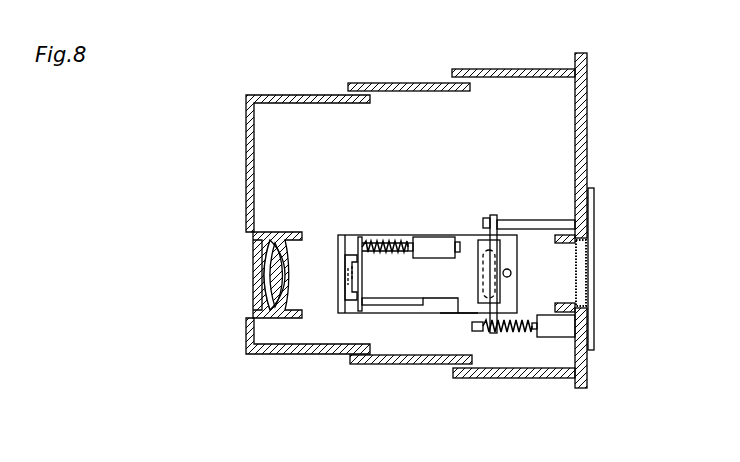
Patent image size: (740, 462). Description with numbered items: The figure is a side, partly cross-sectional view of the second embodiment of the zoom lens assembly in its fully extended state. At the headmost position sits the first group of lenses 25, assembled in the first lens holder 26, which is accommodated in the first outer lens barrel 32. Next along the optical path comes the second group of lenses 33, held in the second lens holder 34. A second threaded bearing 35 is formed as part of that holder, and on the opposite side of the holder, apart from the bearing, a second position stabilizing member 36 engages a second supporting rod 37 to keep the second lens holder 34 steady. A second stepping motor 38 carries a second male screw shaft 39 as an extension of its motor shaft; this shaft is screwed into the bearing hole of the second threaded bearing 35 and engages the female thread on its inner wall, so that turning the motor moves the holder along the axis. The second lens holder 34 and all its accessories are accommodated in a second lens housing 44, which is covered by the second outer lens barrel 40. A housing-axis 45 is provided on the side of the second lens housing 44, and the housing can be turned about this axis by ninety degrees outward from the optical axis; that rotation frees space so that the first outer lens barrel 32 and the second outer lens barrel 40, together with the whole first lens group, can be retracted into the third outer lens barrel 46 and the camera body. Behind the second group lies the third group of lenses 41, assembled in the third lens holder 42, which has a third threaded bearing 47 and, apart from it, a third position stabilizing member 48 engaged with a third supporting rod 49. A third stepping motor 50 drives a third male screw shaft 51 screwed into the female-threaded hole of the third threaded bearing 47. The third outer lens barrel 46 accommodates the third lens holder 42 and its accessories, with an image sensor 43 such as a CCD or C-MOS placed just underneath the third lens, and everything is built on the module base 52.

The first group of lenses 25 is at (290, 282).
The first lens holder 26 is at (302, 232).
The first outer lens barrel 32 is at (246, 98).
The second group of lenses 33 is at (338, 235).
The second lens holder 34 is at (383, 240).
The second threaded bearing 35 is at (361, 240).
The second position stabilizing member 36 is at (365, 300).
The second supporting rod 37 is at (405, 305).
The second stepping motor 38 is at (438, 238).
The second male screw shaft 39 is at (404, 243).
The second outer lens barrel 40 is at (358, 84).
The third group of lenses 41 is at (478, 242).
The third lens holder 42 is at (470, 313).
The image sensor 43 is at (588, 228).
The second lens housing 44 is at (458, 313).
The housing-axis 45 is at (509, 240).
The third outer lens barrel 46 is at (478, 70).
The third threaded bearing 47 is at (488, 330).
The third position stabilizing member 48 is at (493, 216).
The third supporting rod 49 is at (530, 222).
The third stepping motor 50 is at (560, 337).
The third male screw shaft 51 is at (520, 333).
The module base 52 is at (585, 110).